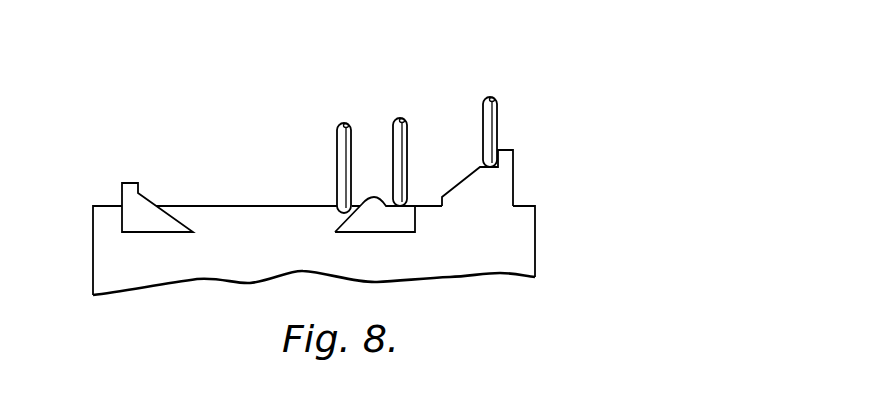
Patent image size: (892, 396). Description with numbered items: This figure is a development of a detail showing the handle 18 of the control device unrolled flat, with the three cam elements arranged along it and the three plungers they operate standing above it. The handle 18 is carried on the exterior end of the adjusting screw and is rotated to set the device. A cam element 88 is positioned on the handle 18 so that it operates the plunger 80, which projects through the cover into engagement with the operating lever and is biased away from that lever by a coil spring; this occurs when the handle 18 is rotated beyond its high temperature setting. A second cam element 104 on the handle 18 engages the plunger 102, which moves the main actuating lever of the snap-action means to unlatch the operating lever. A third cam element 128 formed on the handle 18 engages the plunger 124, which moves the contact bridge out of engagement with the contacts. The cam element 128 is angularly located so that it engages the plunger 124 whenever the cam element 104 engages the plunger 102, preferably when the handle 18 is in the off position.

The handle 18 is at (102, 255).
The cam element 88 is at (130, 193).
The plunger 80 is at (341, 139).
The plunger 102 is at (396, 125).
The cam element 104 is at (402, 225).
The plunger 124 is at (485, 112).
The cam element 128 is at (502, 180).